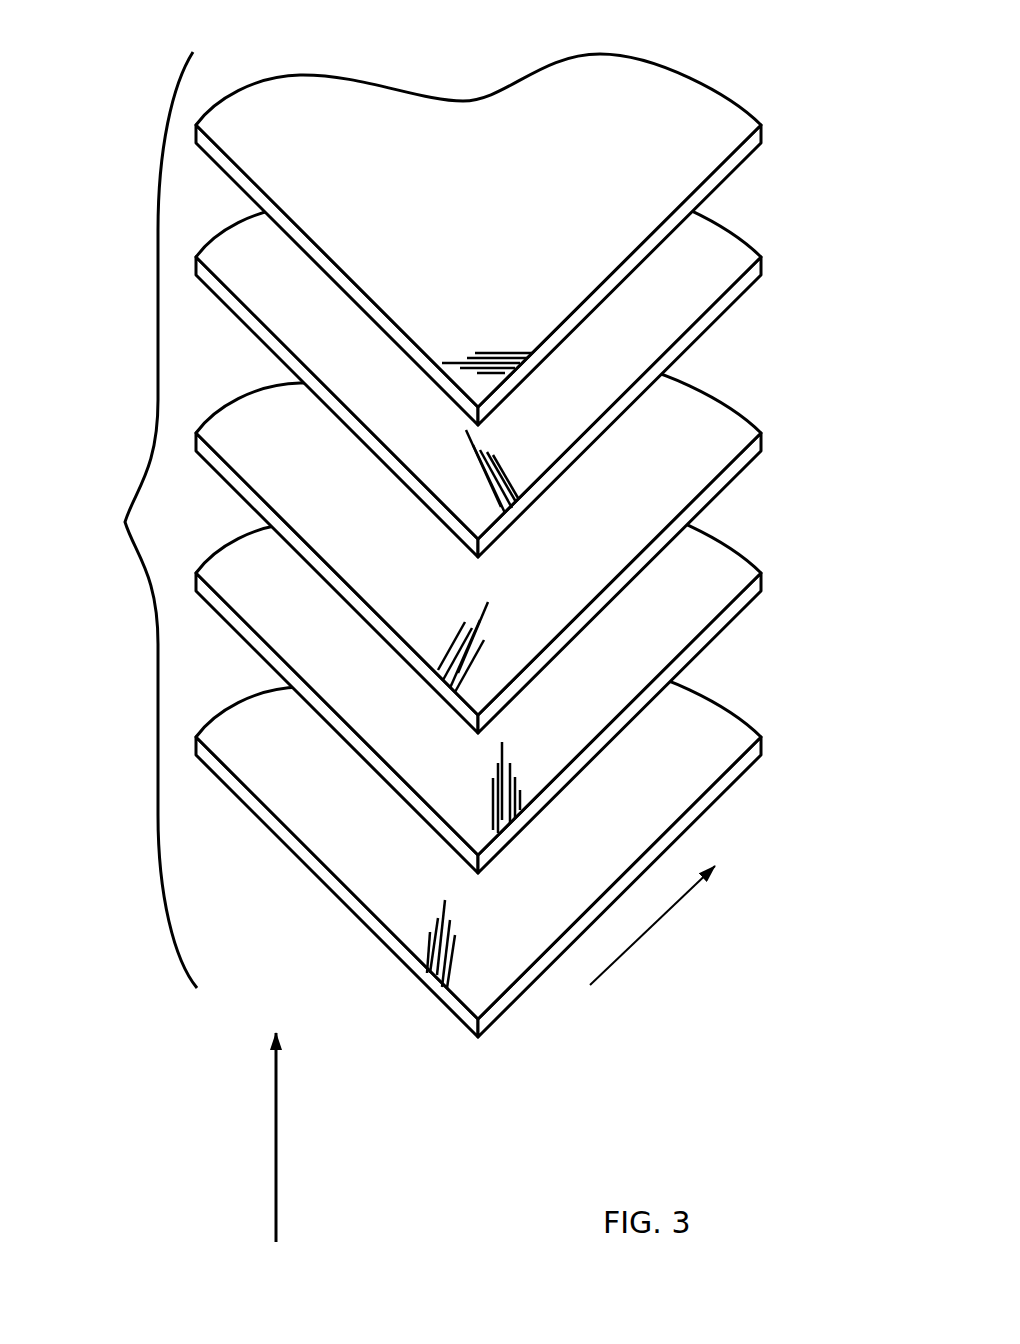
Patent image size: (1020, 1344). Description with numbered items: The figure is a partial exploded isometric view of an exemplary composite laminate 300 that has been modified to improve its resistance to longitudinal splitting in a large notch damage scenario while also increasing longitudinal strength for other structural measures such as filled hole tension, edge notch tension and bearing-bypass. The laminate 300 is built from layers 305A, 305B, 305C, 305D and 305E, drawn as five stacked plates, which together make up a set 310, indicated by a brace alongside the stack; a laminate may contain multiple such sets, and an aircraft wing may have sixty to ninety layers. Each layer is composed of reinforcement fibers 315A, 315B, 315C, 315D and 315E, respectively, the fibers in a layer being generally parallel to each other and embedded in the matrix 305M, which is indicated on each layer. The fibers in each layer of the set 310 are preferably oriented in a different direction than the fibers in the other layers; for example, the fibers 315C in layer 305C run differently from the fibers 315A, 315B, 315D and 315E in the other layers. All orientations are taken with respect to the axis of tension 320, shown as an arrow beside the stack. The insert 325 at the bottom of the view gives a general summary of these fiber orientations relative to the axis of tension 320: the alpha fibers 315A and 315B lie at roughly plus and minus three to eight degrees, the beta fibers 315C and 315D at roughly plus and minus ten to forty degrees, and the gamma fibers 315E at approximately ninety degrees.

The composite laminate 300 is at (445, 72).
The layer 305A is at (714, 771).
The layer 305B is at (719, 613).
The layer 305C is at (713, 456).
The layer 305D is at (703, 294).
The layer 305E is at (700, 169).
The matrix 305M is at (378, 186).
The set 310 is at (134, 520).
The reinforcement fibers 315A is at (428, 926).
The reinforcement fibers 315B is at (489, 778).
The reinforcement fibers 315C is at (461, 630).
The reinforcement fibers 315D is at (467, 458).
The reinforcement fibers 315E is at (466, 352).
The axis of tension 320 is at (511, 1040).
The insert 325 is at (338, 1191).